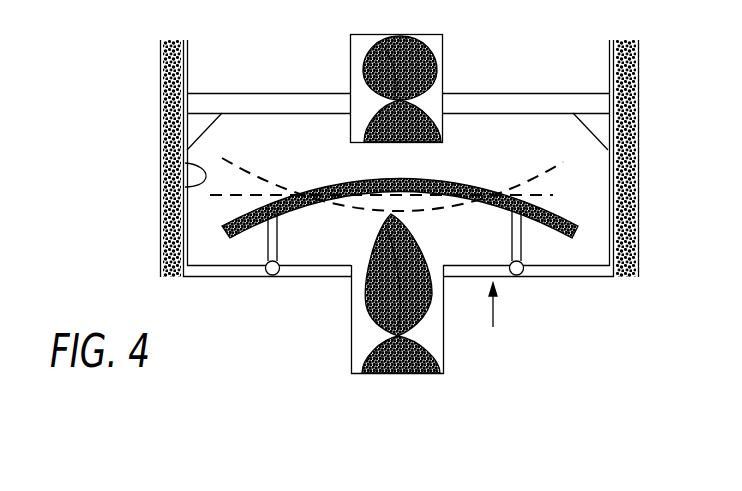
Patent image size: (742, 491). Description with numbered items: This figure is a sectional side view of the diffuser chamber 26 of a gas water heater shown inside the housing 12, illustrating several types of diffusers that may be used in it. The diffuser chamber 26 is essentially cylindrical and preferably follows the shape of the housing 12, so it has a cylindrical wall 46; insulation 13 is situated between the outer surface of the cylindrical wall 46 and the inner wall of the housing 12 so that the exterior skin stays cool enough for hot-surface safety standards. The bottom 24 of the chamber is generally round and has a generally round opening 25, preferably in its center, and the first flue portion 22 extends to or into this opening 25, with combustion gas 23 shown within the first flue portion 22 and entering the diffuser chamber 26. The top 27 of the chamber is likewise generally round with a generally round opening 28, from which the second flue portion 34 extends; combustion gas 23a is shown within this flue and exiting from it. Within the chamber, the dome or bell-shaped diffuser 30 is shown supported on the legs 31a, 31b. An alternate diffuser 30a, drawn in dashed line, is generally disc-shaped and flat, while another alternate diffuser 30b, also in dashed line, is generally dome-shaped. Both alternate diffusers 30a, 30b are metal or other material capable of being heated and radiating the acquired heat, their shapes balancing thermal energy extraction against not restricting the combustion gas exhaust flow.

The housing 12 is at (160, 68).
The insulation 13 is at (187, 148).
The cylindrical wall 46 is at (203, 185).
The top 27 is at (231, 107).
The combustion gas 23a is at (373, 47).
The opening 28 is at (352, 103).
The second flue portion 34 is at (442, 69).
The diffuser 30 is at (425, 178).
The diffuser 30a is at (552, 192).
The diffuser 30b is at (532, 172).
The opening 25 is at (437, 272).
The combustion gas 23 is at (437, 307).
The diffuser chamber 26 is at (493, 327).
The leg 31a is at (267, 240).
The leg 31b is at (516, 235).
The bottom 24 is at (298, 272).
The first flue portion 22 is at (351, 295).